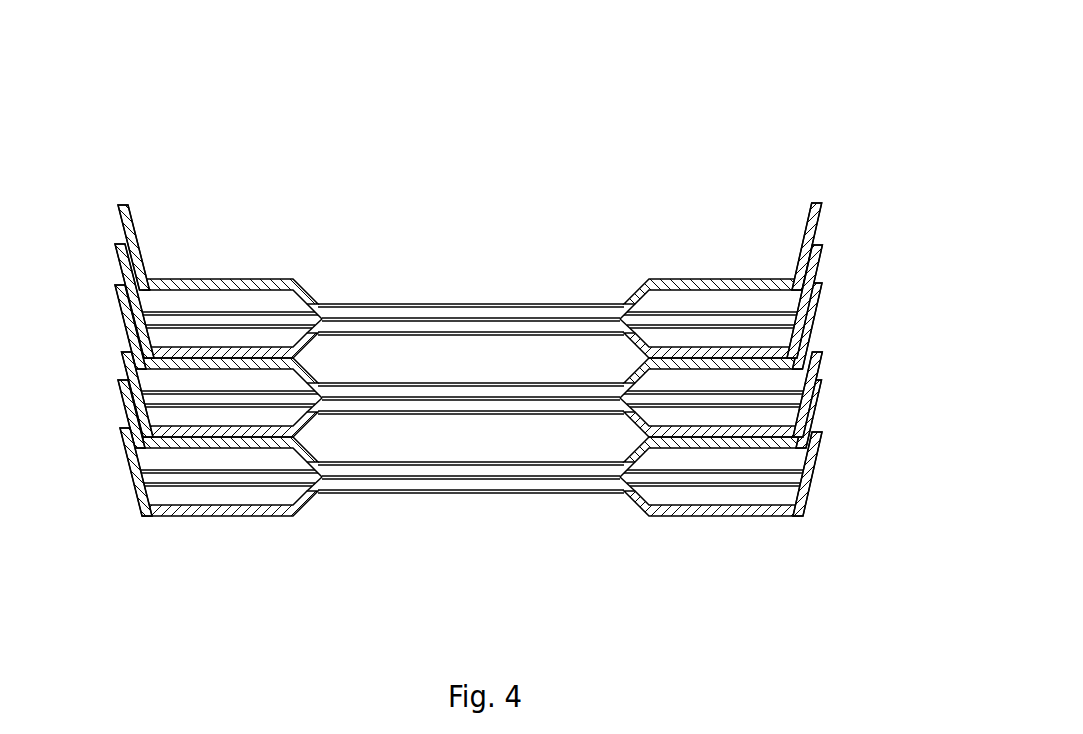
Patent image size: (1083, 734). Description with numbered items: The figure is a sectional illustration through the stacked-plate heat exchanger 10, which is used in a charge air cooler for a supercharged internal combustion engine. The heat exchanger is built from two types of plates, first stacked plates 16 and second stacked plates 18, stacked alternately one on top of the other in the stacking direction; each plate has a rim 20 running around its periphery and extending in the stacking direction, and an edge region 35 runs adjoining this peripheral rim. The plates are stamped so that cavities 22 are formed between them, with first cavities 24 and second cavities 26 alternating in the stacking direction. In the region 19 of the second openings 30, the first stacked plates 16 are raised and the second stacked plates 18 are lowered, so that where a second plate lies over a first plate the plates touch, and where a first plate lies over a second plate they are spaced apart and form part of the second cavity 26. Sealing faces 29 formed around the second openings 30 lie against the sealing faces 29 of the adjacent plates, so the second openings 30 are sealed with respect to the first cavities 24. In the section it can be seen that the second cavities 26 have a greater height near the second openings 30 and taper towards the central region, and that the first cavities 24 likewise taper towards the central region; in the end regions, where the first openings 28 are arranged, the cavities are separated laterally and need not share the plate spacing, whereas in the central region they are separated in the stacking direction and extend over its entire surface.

The stacked-plate heat exchanger 10 is at (852, 165).
The edge region 35 is at (172, 188).
The sealing faces 29 is at (183, 352).
The rim 20 is at (133, 368).
The region of the second opening 19 is at (245, 545).
The second openings 30 is at (190, 547).
The cavities 22 is at (471, 383).
The second cavities 26 is at (222, 318).
The first cavities 24 is at (440, 357).
The first openings 28 is at (535, 522).
The first stacked plates 16 is at (825, 228).
The second stacked plates 18 is at (820, 270).